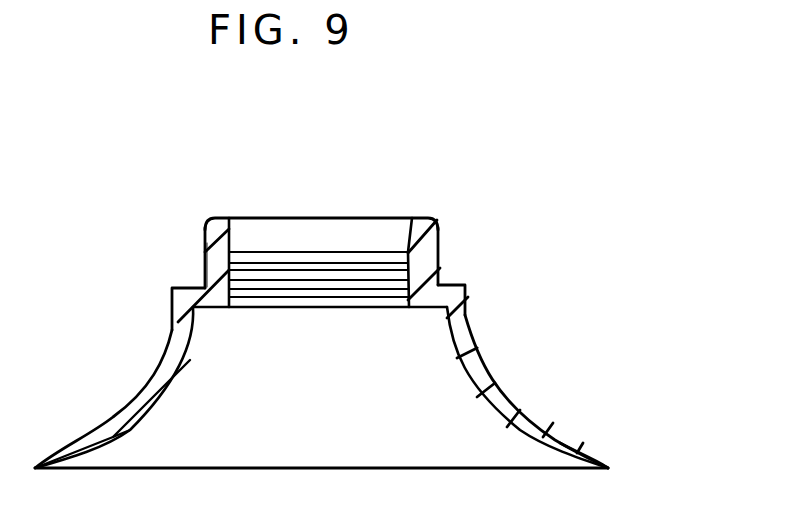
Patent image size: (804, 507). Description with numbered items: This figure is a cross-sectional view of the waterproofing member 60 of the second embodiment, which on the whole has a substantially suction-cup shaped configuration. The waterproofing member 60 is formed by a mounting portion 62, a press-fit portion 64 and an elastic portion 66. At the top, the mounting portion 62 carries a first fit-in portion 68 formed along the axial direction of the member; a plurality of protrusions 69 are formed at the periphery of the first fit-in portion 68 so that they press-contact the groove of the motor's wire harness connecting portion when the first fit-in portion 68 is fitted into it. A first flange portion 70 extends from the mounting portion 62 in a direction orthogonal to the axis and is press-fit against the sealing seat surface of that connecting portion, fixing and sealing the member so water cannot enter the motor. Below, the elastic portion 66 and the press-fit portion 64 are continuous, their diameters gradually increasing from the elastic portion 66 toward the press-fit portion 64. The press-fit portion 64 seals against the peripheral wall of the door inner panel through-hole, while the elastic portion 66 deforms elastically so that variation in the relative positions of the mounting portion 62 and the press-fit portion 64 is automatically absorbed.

The waterproofing member 60 is at (360, 296).
The mounting portion 62 is at (353, 216).
The press-fit portion 64 is at (573, 432).
The elastic portion 66 is at (488, 350).
The first fit-in portion 68 is at (423, 217).
The protrusions 69 is at (200, 257).
The first flange portion 70 is at (177, 287).